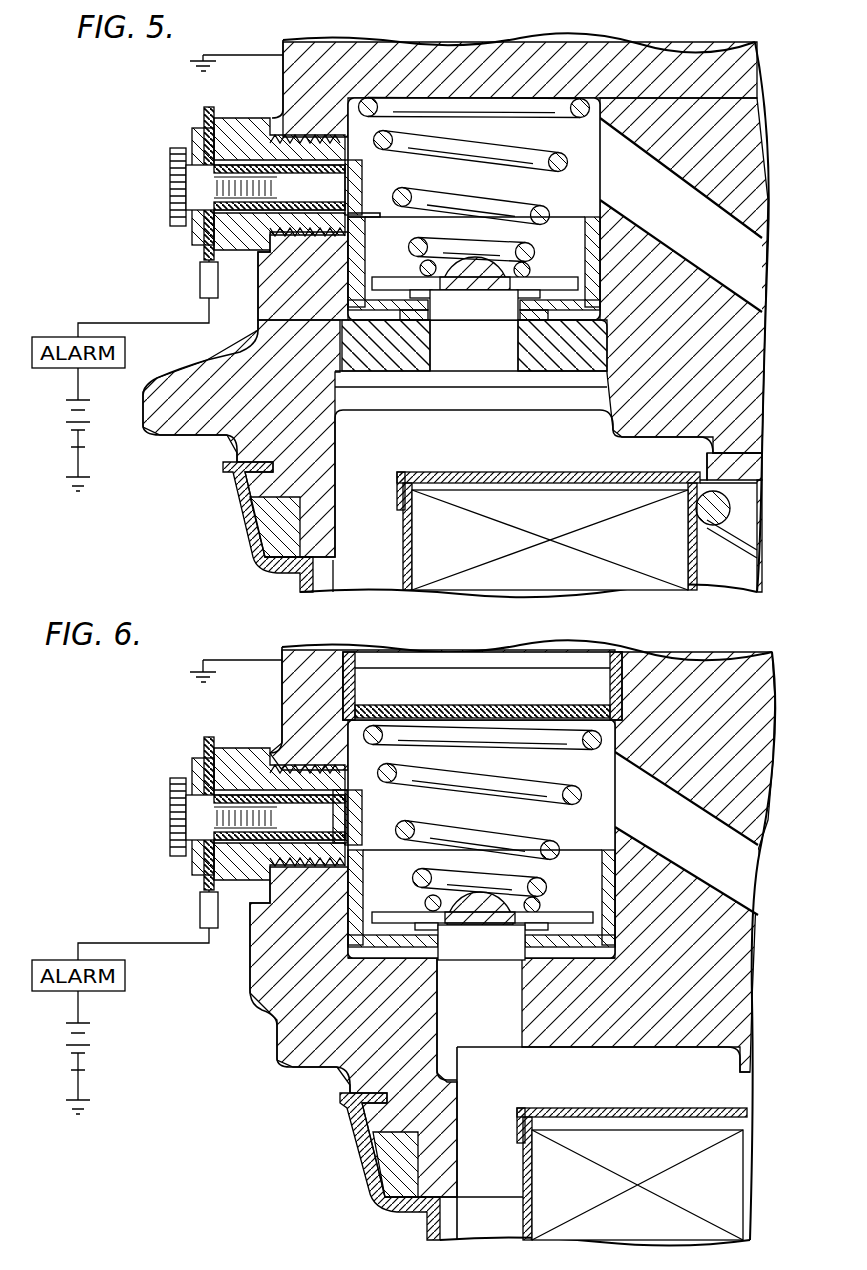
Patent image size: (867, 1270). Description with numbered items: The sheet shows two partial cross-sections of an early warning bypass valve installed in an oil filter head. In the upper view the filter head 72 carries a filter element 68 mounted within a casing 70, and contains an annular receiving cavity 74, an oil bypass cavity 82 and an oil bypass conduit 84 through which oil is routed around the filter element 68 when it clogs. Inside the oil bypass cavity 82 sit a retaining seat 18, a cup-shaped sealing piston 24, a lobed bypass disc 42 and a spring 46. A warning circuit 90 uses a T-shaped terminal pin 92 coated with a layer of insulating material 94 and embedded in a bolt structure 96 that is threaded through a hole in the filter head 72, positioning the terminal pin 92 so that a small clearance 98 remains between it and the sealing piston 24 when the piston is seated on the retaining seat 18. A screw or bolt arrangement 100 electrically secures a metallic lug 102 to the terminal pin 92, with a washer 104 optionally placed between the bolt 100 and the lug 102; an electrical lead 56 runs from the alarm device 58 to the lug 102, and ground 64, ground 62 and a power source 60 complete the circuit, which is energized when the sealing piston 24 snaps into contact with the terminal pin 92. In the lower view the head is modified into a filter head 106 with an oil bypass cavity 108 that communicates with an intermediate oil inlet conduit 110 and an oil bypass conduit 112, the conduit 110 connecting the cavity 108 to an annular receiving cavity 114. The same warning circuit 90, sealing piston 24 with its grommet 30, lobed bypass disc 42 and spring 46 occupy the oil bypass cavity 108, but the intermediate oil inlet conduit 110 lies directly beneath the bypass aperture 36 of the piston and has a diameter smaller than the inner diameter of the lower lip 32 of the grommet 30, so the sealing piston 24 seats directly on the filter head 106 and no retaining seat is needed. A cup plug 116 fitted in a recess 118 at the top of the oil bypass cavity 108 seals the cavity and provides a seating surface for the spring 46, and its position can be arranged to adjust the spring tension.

In FIG. 5, the retaining seat 18 is at (540, 371).
In FIG. 5, the sealing piston 24 is at (579, 227).
In FIG. 6, the sealing piston 24 is at (593, 872).
In FIG. 6, the grommet 30 is at (410, 912).
In FIG. 6, the lower lip 32 is at (413, 955).
In FIG. 6, the bypass aperture 36 is at (518, 948).
In FIG. 5, the lobed bypass disc 42 is at (560, 282).
In FIG. 6, the lobed bypass disc 42 is at (575, 918).
In FIG. 5, the spring 46 is at (492, 100).
In FIG. 6, the spring 46 is at (487, 790).
In FIG. 5, the electrical lead 56 is at (120, 323).
In FIG. 6, the electrical lead 56 is at (125, 943).
In FIG. 5, the alarm device 58 is at (125, 360).
In FIG. 6, the alarm device 58 is at (50, 958).
In FIG. 5, the power source 60 is at (97, 437).
In FIG. 6, the power source 60 is at (93, 1045).
In FIG. 5, the ground 62 is at (76, 497).
In FIG. 6, the ground 62 is at (74, 1118).
In FIG. 5, the ground 64 is at (187, 69).
In FIG. 6, the ground 64 is at (186, 678).
In FIG. 5, the filter element 68 is at (415, 528).
In FIG. 6, the filter element 68 is at (533, 1210).
In FIG. 5, the casing 70 is at (245, 525).
In FIG. 5, the filter head 72 is at (713, 99).
In FIG. 5, the annular receiving cavity 74 is at (450, 443).
In FIG. 5, the oil bypass cavity 82 is at (590, 144).
In FIG. 5, the oil bypass conduit 84 is at (755, 282).
In FIG. 5, the warning circuit 90 is at (230, 190).
In FIG. 6, the warning circuit 90 is at (176, 747).
In FIG. 5, the T-shaped terminal pin 92 is at (360, 177).
In FIG. 5, the layer of insulating material 94 is at (293, 207).
In FIG. 5, the bolt structure 96 is at (258, 118).
In FIG. 5, the clearance 98 is at (362, 214).
In FIG. 5, the screw or bolt arrangement 100 is at (170, 198).
In FIG. 5, the metallic lug 102 is at (200, 255).
In FIG. 5, the washer 104 is at (192, 237).
In FIG. 6, the filter head 106 is at (684, 992).
In FIG. 6, the oil bypass cavity 108 is at (605, 797).
In FIG. 6, the intermediate oil inlet conduit 110 is at (498, 1037).
In FIG. 6, the oil bypass conduit 112 is at (752, 895).
In FIG. 6, the annular receiving cavity 114 is at (515, 1155).
In FIG. 6, the cup plug 116 is at (587, 680).
In FIG. 6, the recess 118 is at (623, 712).